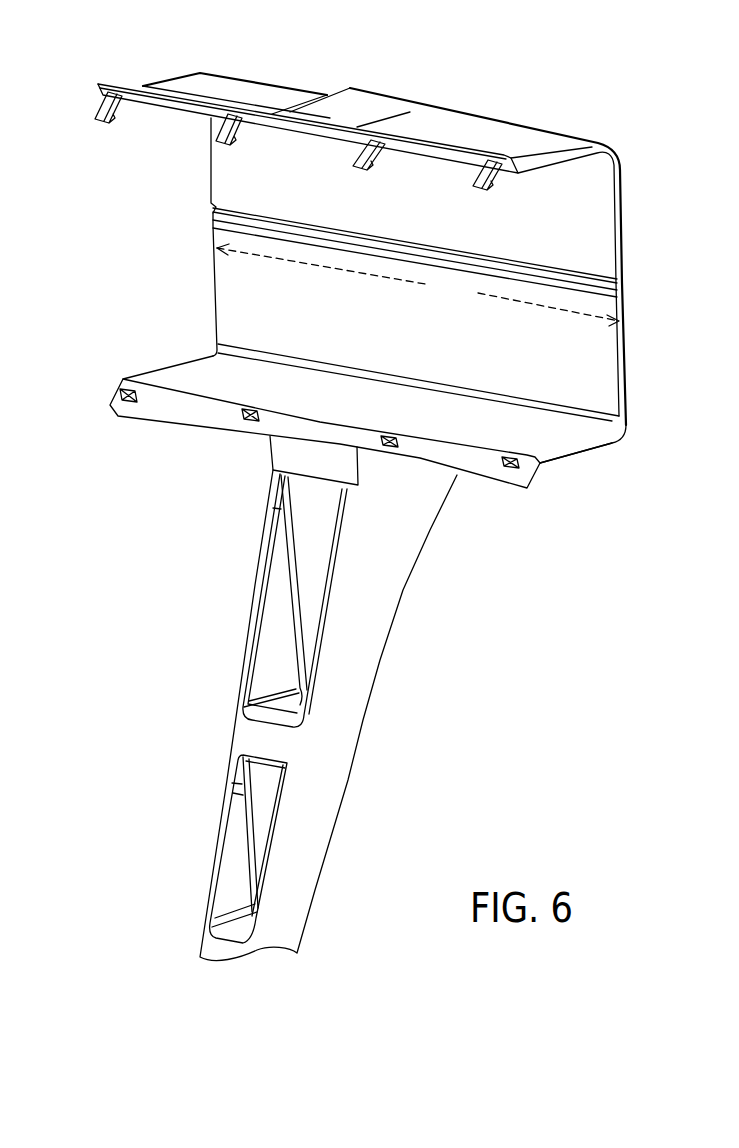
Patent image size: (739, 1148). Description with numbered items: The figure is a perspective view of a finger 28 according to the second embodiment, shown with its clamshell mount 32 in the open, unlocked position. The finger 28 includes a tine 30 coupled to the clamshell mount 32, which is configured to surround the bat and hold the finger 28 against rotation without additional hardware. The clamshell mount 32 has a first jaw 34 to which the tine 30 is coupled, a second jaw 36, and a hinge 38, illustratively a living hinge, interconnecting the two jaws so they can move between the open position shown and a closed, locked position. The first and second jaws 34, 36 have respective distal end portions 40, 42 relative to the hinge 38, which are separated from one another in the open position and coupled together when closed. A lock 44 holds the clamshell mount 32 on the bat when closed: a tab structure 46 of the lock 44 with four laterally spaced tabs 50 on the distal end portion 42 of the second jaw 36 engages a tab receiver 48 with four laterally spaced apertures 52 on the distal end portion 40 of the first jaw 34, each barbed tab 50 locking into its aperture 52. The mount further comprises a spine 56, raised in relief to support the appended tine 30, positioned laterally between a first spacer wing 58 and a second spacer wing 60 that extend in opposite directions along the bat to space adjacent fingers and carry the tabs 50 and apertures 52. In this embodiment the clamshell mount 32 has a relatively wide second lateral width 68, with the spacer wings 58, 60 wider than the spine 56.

The finger 28 is at (582, 83).
The tine 30 is at (320, 778).
The clamshell mount 32 is at (114, 463).
The first jaw 34 is at (568, 447).
The second jaw 36 is at (622, 217).
The hinge 38 is at (623, 286).
The distal end portion of the first jaw 40 is at (190, 423).
The distal end portion of the second jaw 42 is at (165, 102).
The lock 44 is at (50, 187).
The tab structure 46 is at (108, 172).
The tab receiver 48 is at (110, 255).
The tab 50 is at (226, 148).
The aperture 52 is at (503, 462).
The spine 56 is at (357, 112).
The first spacer wing 58 is at (480, 140).
The second spacer wing 60 is at (215, 94).
The second lateral width 68 is at (418, 285).